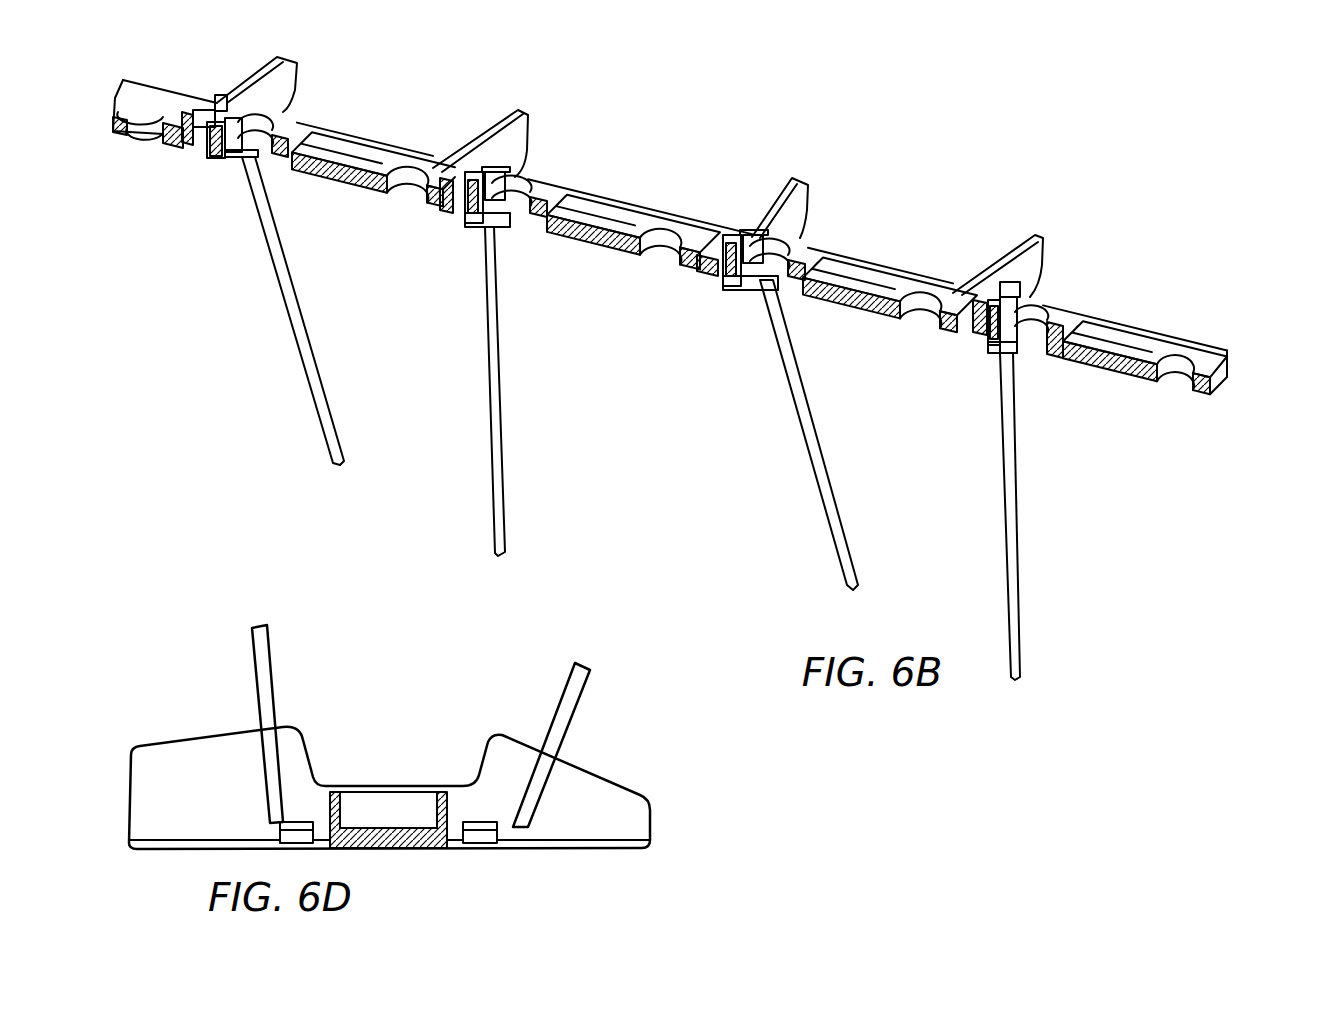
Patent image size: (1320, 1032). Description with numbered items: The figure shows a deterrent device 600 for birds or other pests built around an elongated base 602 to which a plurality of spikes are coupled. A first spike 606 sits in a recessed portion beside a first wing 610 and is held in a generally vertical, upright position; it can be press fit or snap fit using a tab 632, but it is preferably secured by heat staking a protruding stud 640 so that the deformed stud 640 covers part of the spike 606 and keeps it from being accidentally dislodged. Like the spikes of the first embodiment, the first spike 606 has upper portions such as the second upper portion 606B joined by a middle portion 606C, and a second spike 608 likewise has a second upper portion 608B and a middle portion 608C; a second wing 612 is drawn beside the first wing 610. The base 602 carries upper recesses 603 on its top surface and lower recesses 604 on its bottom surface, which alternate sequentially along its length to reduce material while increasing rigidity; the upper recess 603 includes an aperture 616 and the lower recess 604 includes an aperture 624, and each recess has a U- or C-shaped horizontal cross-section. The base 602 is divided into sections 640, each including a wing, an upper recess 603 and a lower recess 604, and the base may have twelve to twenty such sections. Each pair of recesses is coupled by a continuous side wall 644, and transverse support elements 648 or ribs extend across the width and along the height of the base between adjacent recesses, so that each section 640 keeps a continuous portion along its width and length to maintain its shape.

In FIG. 6B, the deterrent device 600 is at (1008, 127).
In FIG. 6B, the base 602 is at (1237, 356).
In FIG. 6D, the base 602 is at (410, 850).
In FIG. 6B, the upper recess 603 is at (522, 226).
In FIG. 6D, the upper recess 603 is at (392, 803).
In FIG. 6B, the lower recess 604 is at (594, 210).
In FIG. 6B, the first spike 606 is at (992, 488).
In FIG. 6B, the second upper portion of first spike 606B is at (971, 328).
In FIG. 6B, the middle portion of first spike 606C is at (1017, 540).
In FIG. 6B, the second spike 608 is at (733, 412).
In FIG. 6B, the second upper portion of second spike 608B is at (713, 268).
In FIG. 6B, the middle portion of second spike 608C is at (812, 458).
In FIG. 6B, the first wing 610 is at (1040, 235).
In FIG. 6D, the first wing 610 is at (613, 784).
In FIG. 6B, the tab 612 is at (806, 175).
In FIG. 6D, the tab 612 is at (188, 736).
In FIG. 6B, the aperture 616 is at (1173, 372).
In FIG. 6B, the aperture 624 is at (1033, 312).
In FIG. 6B, the tab 632 is at (727, 282).
In FIG. 6B, the protruding stud 640 is at (734, 222).
In FIG. 6B, the continuous side wall 644 is at (889, 265).
In FIG. 6B, the transverse support element 648 is at (813, 282).